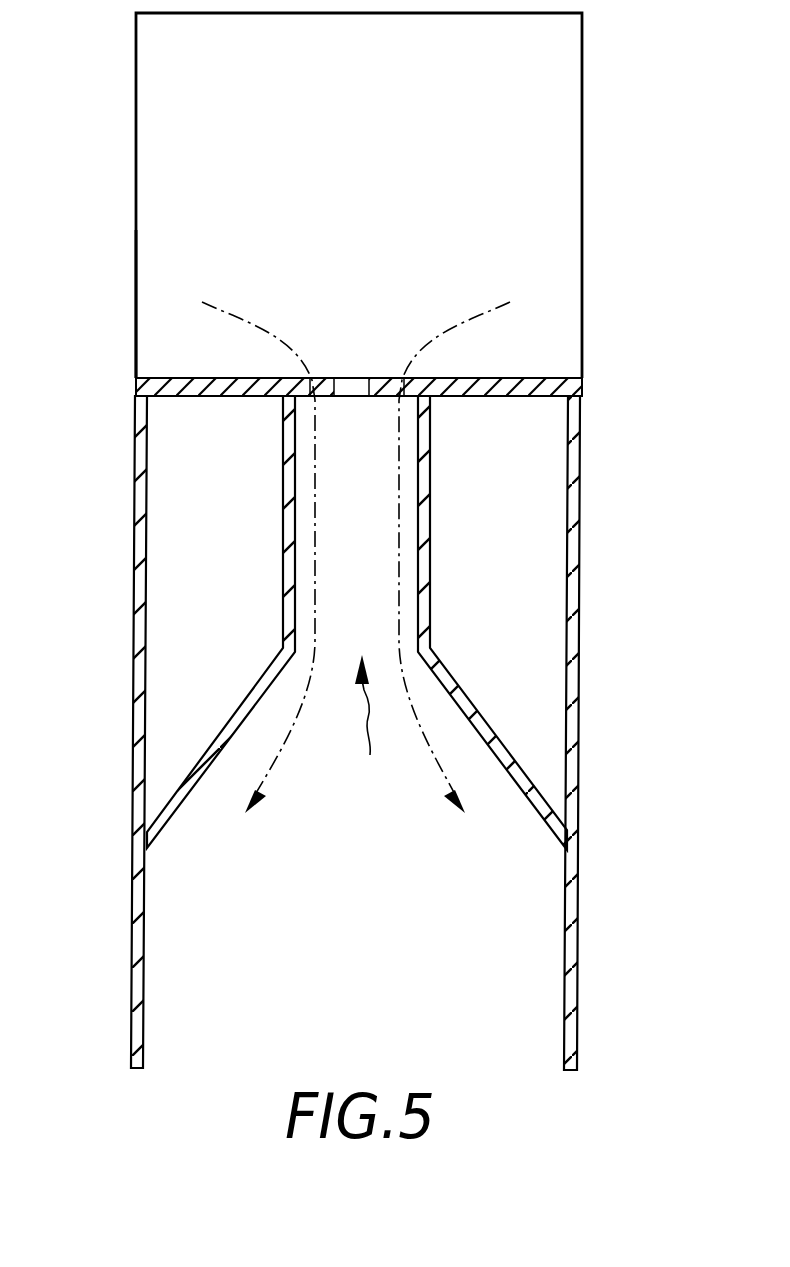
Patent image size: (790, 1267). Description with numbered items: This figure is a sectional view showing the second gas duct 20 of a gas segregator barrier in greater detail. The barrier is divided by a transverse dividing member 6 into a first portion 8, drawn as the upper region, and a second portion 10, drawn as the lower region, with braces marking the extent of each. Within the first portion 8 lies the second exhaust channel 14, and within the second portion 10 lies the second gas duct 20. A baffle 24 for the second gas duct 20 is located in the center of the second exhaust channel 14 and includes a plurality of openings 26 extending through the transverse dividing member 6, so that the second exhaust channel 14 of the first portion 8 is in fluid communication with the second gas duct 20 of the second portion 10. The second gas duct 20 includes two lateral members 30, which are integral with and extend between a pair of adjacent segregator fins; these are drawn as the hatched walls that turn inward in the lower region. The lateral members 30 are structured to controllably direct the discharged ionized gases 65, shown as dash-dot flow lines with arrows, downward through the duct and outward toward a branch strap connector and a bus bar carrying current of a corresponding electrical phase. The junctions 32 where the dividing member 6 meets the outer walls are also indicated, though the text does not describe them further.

The transverse dividing member 6 is at (228, 377).
The first portion 8 is at (662, 15).
The second portion 10 is at (660, 398).
The second exhaust channel 14 is at (176, 272).
The second gas duct 20 is at (370, 723).
The baffle 24 is at (357, 352).
The openings 26 is at (392, 396).
The lateral members 30 is at (135, 600).
The junctions 32 is at (108, 424).
The ionized gases 65 is at (262, 322).